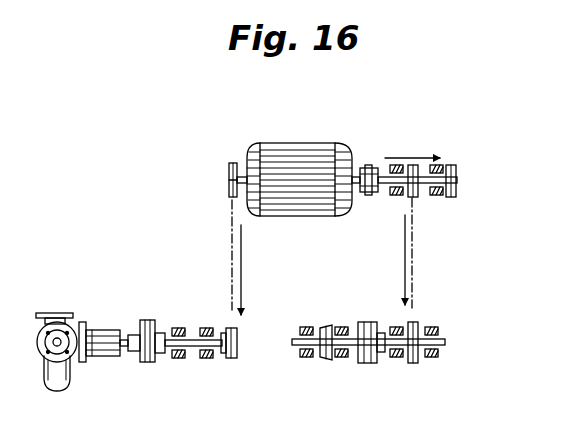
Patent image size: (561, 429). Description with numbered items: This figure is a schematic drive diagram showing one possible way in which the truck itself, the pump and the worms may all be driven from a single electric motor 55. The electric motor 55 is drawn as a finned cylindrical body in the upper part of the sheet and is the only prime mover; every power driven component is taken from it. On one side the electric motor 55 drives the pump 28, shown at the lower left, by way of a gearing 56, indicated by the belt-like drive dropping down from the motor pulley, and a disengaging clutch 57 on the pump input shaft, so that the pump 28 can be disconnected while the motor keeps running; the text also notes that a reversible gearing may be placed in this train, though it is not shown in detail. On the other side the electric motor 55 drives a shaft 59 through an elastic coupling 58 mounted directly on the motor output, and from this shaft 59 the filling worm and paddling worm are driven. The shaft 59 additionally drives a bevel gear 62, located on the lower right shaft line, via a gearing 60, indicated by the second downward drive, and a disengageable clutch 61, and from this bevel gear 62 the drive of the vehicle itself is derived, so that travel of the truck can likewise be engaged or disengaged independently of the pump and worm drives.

The pump 28 is at (100, 330).
The electric motor 55 is at (250, 146).
The gearing 56 is at (236, 268).
The disengaging clutch 57 is at (147, 364).
The elastic coupling 58 is at (364, 166).
The shaft 59 is at (453, 198).
The gearing 60 is at (415, 275).
The disengageable clutch 61 is at (370, 364).
The bevel gear 62 is at (326, 325).